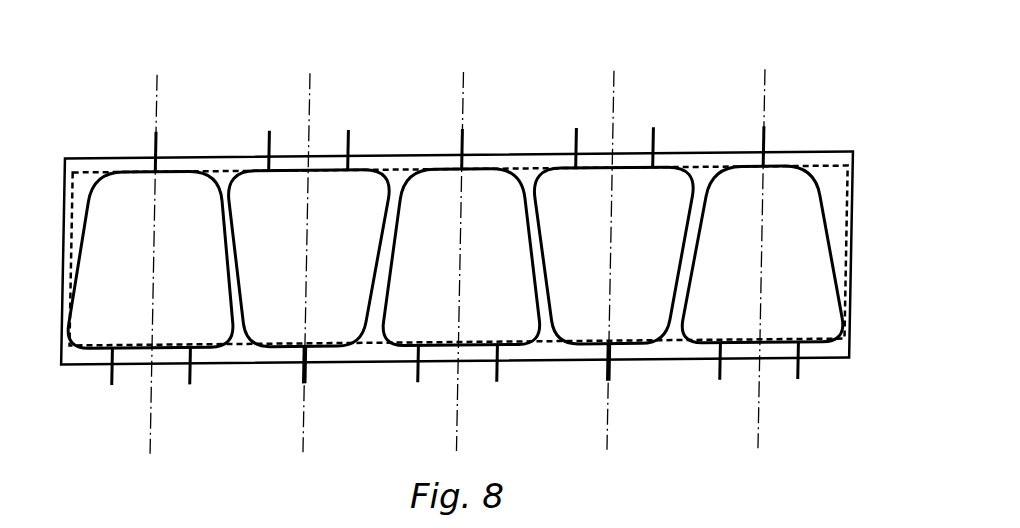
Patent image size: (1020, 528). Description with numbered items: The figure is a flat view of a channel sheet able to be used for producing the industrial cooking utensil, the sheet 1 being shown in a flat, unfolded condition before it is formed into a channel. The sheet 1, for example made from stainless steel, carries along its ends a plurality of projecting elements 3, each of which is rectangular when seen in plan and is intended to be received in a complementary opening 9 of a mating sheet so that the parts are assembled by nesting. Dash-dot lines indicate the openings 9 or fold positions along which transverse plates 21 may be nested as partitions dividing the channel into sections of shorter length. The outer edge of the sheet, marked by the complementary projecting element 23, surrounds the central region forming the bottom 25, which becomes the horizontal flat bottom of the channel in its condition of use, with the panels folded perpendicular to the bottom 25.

The sheet 1 is at (191, 292).
The projecting element 3 is at (154, 131).
The opening 9 is at (306, 441).
The transverse plate 21 is at (389, 87).
The complementary projecting element 23 is at (852, 215).
The bottom 25 is at (851, 156).